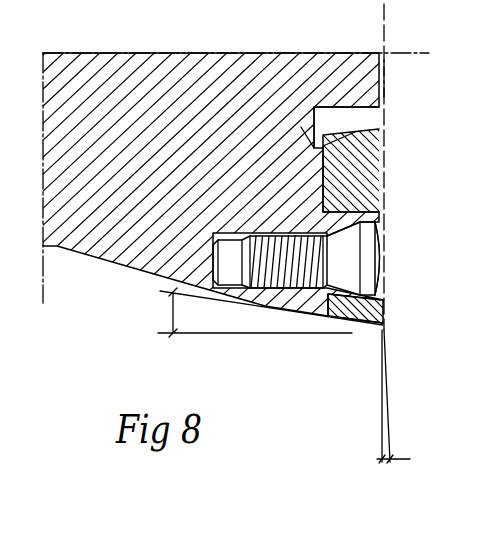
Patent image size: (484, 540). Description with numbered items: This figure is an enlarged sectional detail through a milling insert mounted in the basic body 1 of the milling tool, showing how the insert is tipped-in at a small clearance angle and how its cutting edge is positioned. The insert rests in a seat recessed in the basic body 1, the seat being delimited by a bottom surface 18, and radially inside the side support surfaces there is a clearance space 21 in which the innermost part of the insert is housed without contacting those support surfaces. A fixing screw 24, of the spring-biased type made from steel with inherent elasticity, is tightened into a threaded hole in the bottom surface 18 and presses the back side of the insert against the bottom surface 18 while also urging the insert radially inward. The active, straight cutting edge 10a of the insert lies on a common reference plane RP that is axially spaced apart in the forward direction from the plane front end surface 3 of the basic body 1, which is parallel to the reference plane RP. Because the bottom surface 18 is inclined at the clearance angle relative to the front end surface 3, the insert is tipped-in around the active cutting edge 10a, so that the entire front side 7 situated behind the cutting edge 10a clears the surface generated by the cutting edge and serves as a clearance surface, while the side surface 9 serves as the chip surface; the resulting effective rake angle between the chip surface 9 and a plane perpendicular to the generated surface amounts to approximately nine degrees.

The basic body 1 is at (118, 274).
The front end surface 3 is at (382, 71).
The front side 7 is at (380, 142).
The chip surface 9 is at (374, 330).
The active cutting edge 10a is at (386, 321).
The bottom surface 18 is at (325, 190).
The clearance space 21 is at (350, 114).
The fixing screw 24 is at (386, 264).
The reference plane RP is at (384, 80).